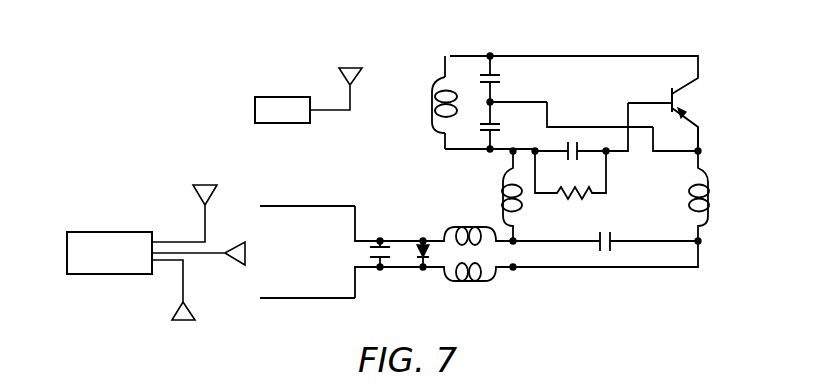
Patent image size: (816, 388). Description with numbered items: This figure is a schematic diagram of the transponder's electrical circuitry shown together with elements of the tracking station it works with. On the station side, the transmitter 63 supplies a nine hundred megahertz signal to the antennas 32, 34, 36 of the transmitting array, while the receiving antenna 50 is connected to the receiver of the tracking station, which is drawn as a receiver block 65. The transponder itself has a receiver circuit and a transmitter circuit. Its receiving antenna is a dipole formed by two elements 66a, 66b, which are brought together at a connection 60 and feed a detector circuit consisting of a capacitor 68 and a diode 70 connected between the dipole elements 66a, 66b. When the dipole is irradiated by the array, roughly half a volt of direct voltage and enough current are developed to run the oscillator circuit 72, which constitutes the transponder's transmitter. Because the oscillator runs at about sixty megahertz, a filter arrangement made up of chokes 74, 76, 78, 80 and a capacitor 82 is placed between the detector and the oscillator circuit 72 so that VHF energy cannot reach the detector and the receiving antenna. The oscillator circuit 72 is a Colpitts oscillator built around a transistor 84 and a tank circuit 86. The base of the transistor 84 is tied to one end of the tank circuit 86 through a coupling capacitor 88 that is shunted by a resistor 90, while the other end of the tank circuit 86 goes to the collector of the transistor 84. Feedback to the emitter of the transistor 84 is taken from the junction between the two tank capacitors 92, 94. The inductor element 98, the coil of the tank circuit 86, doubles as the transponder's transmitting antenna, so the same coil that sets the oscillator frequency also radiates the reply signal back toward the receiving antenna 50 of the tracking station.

The transmitter 63 is at (66, 258).
The antenna 36 is at (196, 201).
The antenna 34 is at (229, 262).
The antenna 32 is at (175, 312).
The receiver (RECV) 65 is at (284, 125).
The receiving antenna 50 is at (339, 77).
The dipole element 66a is at (322, 206).
The dipole element 66b is at (300, 298).
The input connection 60 is at (357, 283).
The capacitor 68 is at (368, 255).
The diode 70 is at (418, 247).
The choke 74 is at (466, 228).
The choke 76 is at (475, 279).
The choke 78 is at (502, 197).
The choke 80 is at (712, 208).
The capacitor 82 is at (605, 235).
The oscillator circuit 72 is at (597, 53).
The tank circuit 86 is at (463, 69).
The inductor element 98 is at (432, 106).
The capacitor 92 is at (500, 79).
The capacitor 94 is at (500, 127).
The coupling capacitor 88 is at (573, 161).
The resistor 90 is at (578, 200).
The transistor 84 is at (670, 93).